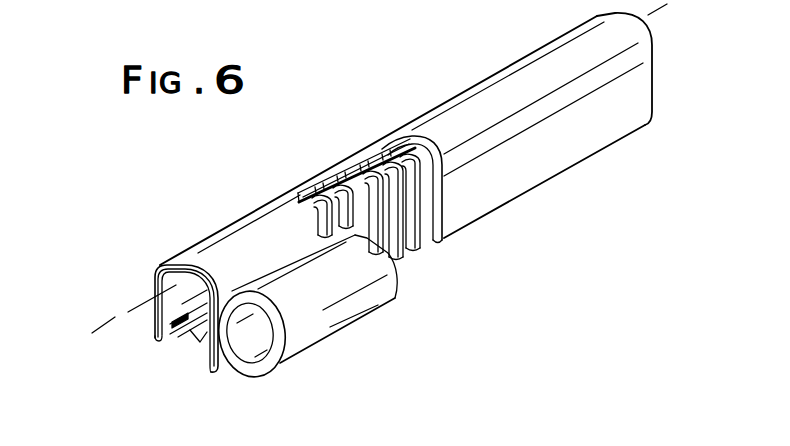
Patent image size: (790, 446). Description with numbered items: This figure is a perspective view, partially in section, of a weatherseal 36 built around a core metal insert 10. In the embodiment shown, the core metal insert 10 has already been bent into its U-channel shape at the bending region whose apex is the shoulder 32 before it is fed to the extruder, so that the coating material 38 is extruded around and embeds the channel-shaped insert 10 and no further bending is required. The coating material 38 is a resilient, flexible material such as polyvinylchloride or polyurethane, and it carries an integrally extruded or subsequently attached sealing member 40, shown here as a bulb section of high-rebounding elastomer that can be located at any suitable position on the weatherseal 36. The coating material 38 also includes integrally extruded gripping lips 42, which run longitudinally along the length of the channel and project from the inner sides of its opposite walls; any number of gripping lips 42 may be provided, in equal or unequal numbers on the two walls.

The core metal insert 10 is at (344, 171).
The shoulder 32 is at (113, 318).
The weatherseal 36 is at (146, 244).
The coating material 38 is at (388, 141).
The sealing member 40 is at (265, 378).
The gripping lips 42 is at (197, 338).